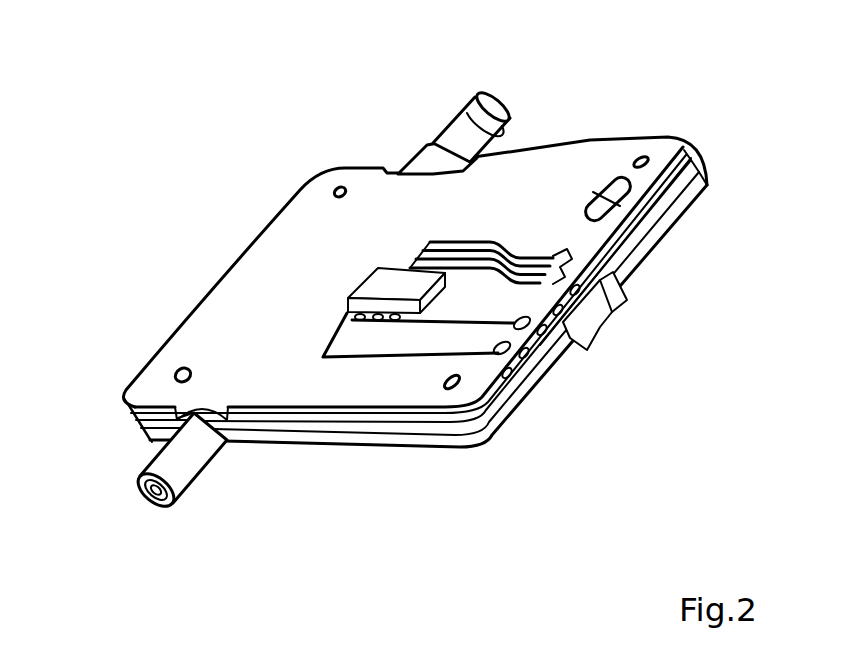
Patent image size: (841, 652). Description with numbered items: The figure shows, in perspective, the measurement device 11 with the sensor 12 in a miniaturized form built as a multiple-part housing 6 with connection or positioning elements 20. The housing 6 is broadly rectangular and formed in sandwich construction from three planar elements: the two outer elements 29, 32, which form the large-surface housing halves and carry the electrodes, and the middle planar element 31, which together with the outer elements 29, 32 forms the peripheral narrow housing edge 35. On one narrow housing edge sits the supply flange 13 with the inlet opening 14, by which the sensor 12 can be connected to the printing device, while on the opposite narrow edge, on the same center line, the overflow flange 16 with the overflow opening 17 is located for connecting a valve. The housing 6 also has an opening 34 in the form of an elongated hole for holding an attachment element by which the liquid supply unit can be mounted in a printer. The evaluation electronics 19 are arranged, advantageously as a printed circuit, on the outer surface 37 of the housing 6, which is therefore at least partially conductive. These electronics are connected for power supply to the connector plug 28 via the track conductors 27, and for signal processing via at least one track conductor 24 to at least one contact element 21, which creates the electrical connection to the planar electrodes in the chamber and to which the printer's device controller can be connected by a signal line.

The housing 6 is at (273, 283).
The measurement device 11 is at (303, 255).
The sensor 12 is at (567, 173).
The supply flange 13 is at (193, 447).
The inlet opening 14 is at (143, 500).
The overflow flange 16 is at (463, 137).
The overflow opening 17 is at (507, 103).
The evaluation electronics 19 is at (380, 285).
The connection or positioning elements 20 is at (343, 188).
The contact element 21 is at (533, 388).
The track conductor 24 is at (500, 398).
The track conductors 27 is at (540, 250).
The connector plug 28 is at (607, 317).
The outer planar element 29 is at (262, 413).
The middle planar element 31 is at (306, 428).
The outer planar element 32 is at (368, 440).
The opening (elongated hole) 34 is at (630, 203).
The narrow housing edge 35 is at (143, 427).
The outer surface 37 is at (288, 267).